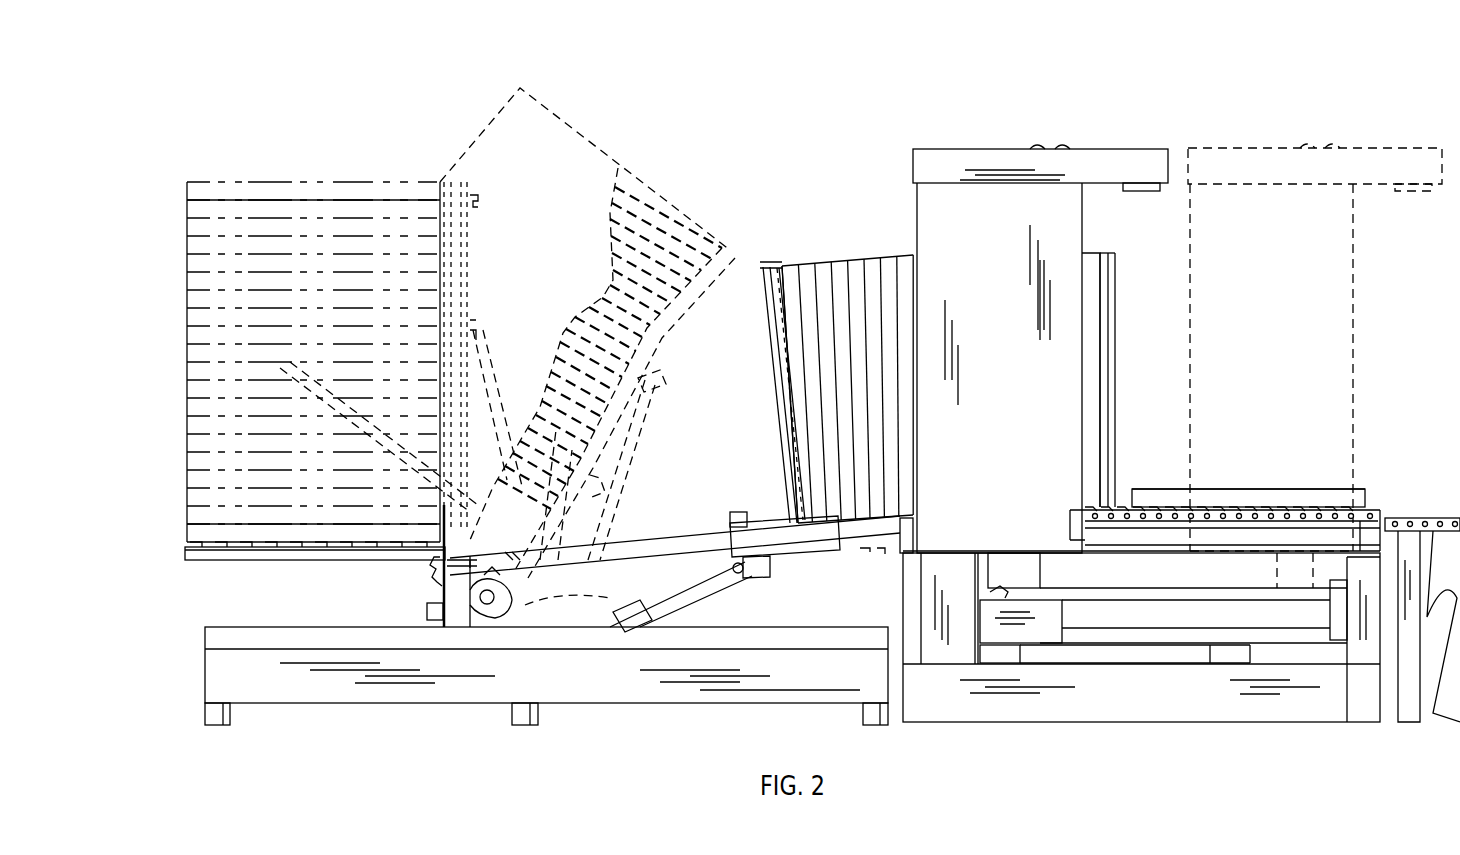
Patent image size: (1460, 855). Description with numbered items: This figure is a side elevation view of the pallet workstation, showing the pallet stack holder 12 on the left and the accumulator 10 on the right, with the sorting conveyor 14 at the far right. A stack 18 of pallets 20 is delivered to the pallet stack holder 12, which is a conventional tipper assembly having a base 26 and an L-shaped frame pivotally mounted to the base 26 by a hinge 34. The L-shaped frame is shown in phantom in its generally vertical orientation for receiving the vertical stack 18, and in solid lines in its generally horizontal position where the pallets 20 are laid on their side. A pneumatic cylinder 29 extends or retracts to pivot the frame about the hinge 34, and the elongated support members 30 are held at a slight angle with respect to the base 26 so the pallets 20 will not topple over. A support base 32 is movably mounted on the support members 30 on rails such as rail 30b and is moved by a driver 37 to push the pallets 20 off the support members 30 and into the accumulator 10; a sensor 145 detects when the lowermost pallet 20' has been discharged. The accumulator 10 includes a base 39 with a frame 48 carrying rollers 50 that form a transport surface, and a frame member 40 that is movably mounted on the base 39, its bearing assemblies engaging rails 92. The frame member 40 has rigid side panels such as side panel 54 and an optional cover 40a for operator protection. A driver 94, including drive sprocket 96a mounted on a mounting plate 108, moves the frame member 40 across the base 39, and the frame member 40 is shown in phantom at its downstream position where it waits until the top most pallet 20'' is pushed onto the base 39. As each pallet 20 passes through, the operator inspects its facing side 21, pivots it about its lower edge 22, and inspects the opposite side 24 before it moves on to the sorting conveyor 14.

The accumulator 10 is at (1248, 110).
The pallet stack holder 12 is at (578, 108).
The sorting conveyor 14 is at (1405, 500).
The stack of pallets 18 is at (352, 165).
The pallet 20 is at (664, 326).
The lowermost pallet 20' is at (487, 367).
The top most pallet 20'' is at (1248, 461).
The facing side 21 is at (1115, 298).
The lower edge 22 is at (1117, 488).
The opposite side 24 is at (1085, 280).
The base 26 is at (580, 690).
The pneumatic cylinder 29 is at (615, 608).
The elongated support members 30 is at (620, 540).
The elongated rail 30b is at (858, 540).
The support base 32 is at (770, 258).
The hinge 34 is at (500, 620).
The driver 37 is at (567, 490).
The base 39 is at (1025, 735).
The frame member 40 is at (957, 130).
The cover 40a is at (1068, 378).
The frame 48 is at (1338, 712).
The rollers 50 is at (1118, 508).
The rigid side panel 54 is at (1072, 237).
The rails 92 is at (1300, 535).
The driver 94 is at (1243, 580).
The drive sprocket 96a is at (1045, 600).
The mounting plate 108 is at (1088, 590).
The sensor 145 is at (190, 548).